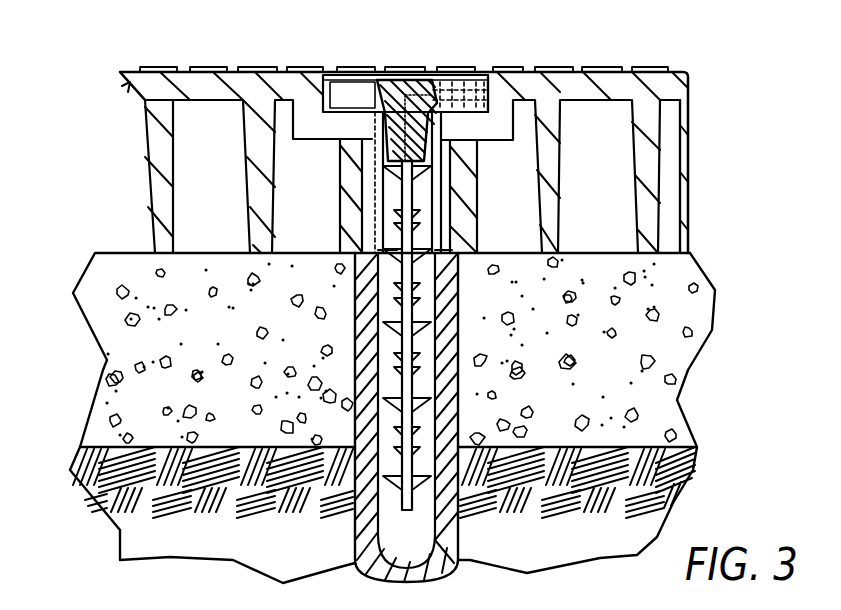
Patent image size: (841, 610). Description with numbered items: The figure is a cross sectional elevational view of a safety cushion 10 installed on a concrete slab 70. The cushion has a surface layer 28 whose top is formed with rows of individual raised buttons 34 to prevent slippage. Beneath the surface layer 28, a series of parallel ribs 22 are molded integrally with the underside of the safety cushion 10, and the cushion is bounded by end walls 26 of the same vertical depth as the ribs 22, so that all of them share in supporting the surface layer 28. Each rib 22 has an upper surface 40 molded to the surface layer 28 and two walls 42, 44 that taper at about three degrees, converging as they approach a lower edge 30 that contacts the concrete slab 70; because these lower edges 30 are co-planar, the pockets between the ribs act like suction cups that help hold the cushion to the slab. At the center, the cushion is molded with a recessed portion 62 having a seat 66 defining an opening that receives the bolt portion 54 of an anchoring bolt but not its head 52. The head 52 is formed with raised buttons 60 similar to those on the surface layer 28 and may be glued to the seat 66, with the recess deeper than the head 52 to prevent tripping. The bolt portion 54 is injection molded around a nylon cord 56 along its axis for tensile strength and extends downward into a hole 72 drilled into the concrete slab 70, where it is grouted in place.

The safety cushion 10 is at (670, 60).
The ribs 22 is at (146, 163).
The end walls 26 is at (690, 198).
The surface layer 28 is at (122, 86).
The lower edge 30 is at (172, 253).
The raised buttons 34 is at (203, 66).
The upper surface 40 is at (238, 103).
The wall 42 is at (247, 177).
The wall 44 is at (276, 178).
The head 52 is at (340, 77).
The bolt portion 54 is at (432, 213).
The nylon cord 56 is at (425, 160).
The raised buttons 60 is at (357, 76).
The recessed portion 62 is at (498, 100).
The seat 66 is at (467, 72).
The concrete slab 70 is at (712, 296).
The hole 72 is at (452, 268).